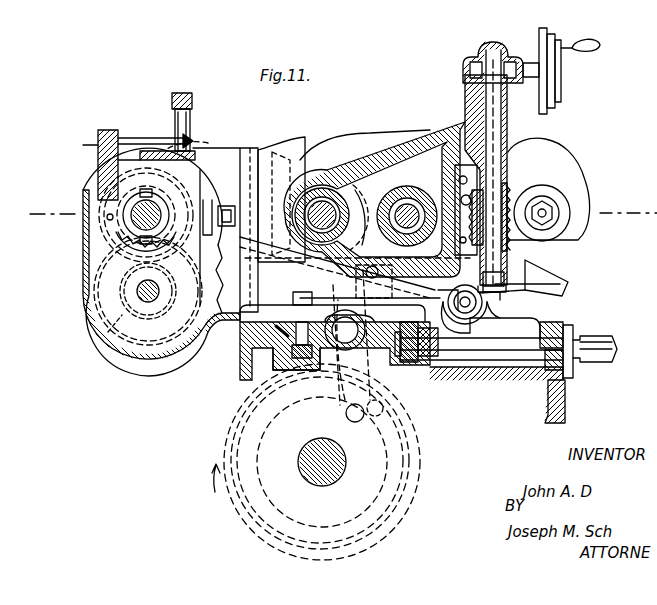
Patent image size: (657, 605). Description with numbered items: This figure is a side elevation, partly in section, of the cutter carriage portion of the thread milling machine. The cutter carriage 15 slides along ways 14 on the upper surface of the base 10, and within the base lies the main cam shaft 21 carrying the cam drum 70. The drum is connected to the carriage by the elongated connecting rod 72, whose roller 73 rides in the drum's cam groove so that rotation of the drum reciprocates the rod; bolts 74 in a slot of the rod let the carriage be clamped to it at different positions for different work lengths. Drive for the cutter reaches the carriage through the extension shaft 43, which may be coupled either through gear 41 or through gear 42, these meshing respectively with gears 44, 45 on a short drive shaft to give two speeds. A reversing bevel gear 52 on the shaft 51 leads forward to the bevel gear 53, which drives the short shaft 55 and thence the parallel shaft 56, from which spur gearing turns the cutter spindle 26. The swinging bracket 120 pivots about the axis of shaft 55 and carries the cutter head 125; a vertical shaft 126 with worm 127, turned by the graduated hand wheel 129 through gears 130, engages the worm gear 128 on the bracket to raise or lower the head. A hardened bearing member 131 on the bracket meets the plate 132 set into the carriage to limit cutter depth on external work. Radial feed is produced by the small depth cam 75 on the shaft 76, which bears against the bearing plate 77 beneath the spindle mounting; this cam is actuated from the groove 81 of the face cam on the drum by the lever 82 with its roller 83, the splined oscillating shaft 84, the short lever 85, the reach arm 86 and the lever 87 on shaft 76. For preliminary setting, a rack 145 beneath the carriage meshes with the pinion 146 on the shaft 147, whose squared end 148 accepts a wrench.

The base 10 is at (45, 206).
The ways 14 is at (260, 312).
The cutter carriage 15 is at (560, 280).
The main cam shaft 21 is at (312, 478).
The cutter spindle 26 is at (556, 213).
The gear 41 is at (222, 215).
The gear 42 is at (130, 250).
The extension shaft 43 is at (134, 223).
The gear 44 is at (133, 358).
The gear 45 is at (105, 333).
The shaft 51 is at (227, 225).
The bevel gear 52 is at (203, 145).
The bevel gear 53 is at (285, 150).
The short shaft 55 is at (320, 200).
The shaft 56 is at (393, 200).
The cam drum 70 is at (410, 510).
The connecting rod 72 is at (297, 338).
The roller 73 is at (278, 372).
The bolts 74 is at (312, 303).
The depth cam 75 is at (484, 294).
The shaft 76 is at (478, 322).
The bearing plate 77 is at (439, 299).
The cam groove 81 is at (400, 455).
The lever 82 is at (380, 388).
The roller 83 is at (345, 403).
The oscillating shaft 84 is at (344, 329).
The short lever 85 is at (352, 297).
The reach arm 86 is at (368, 300).
The lever 87 is at (505, 256).
The swinging bracket 120 is at (466, 110).
The cutter head 125 is at (562, 178).
The shaft 126 is at (502, 128).
The worm 127 is at (508, 198).
The worm gear 128 is at (448, 125).
The hand wheel 129 is at (562, 40).
The gears 130 is at (482, 56).
The bearing member 131 is at (535, 276).
The plate 132 is at (555, 294).
The rack 145 is at (432, 362).
The pinion 146 is at (425, 364).
The shaft 147 is at (512, 362).
The squared end 148 is at (598, 357).